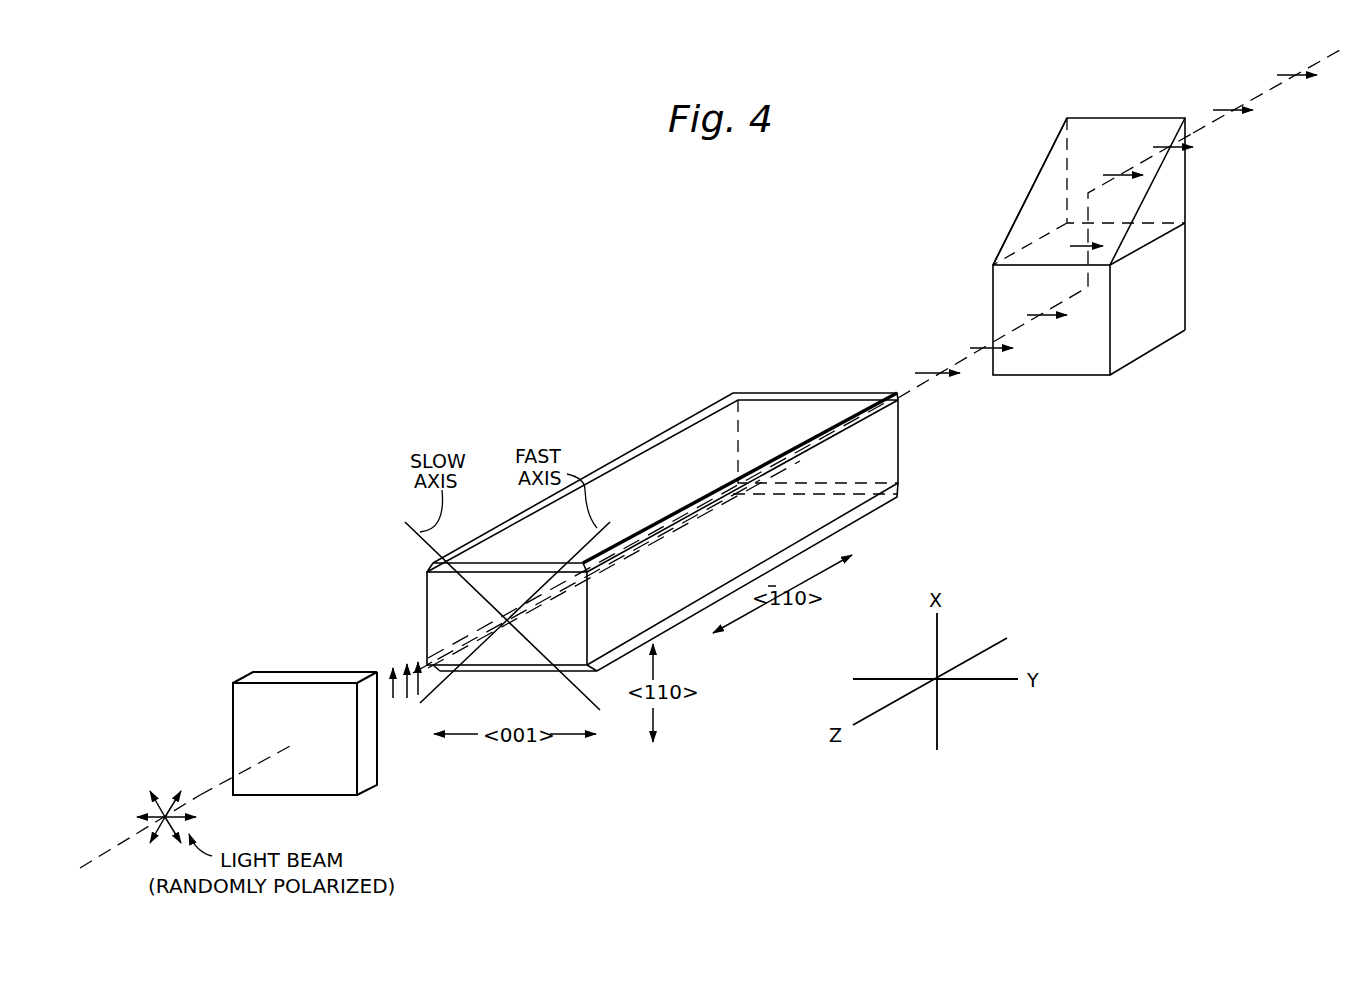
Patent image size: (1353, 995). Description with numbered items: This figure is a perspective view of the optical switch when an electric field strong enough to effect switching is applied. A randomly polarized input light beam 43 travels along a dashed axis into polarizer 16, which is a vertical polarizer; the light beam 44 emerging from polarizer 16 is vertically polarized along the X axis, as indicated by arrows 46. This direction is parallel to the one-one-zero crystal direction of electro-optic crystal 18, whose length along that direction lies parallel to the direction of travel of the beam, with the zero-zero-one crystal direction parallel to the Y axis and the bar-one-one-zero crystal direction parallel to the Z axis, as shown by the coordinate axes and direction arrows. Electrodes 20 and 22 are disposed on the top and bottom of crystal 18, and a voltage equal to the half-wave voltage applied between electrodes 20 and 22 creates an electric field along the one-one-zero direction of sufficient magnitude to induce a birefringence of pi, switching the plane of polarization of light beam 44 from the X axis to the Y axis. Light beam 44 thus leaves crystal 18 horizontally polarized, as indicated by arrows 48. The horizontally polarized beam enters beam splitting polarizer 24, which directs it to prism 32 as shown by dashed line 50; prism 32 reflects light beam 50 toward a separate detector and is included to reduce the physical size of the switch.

The polarizer 16 is at (246, 680).
The electro-optic crystal 18 is at (904, 446).
The electrode 20 is at (820, 401).
The electrode 22 is at (877, 509).
The beam splitting polarizer 24 is at (1092, 246).
The prism 32 is at (1042, 170).
The input light beam 43 is at (117, 845).
The light beam 44 is at (377, 692).
The arrows 46 is at (408, 704).
The arrows 48 is at (952, 384).
The dashed line 50 is at (1092, 244).